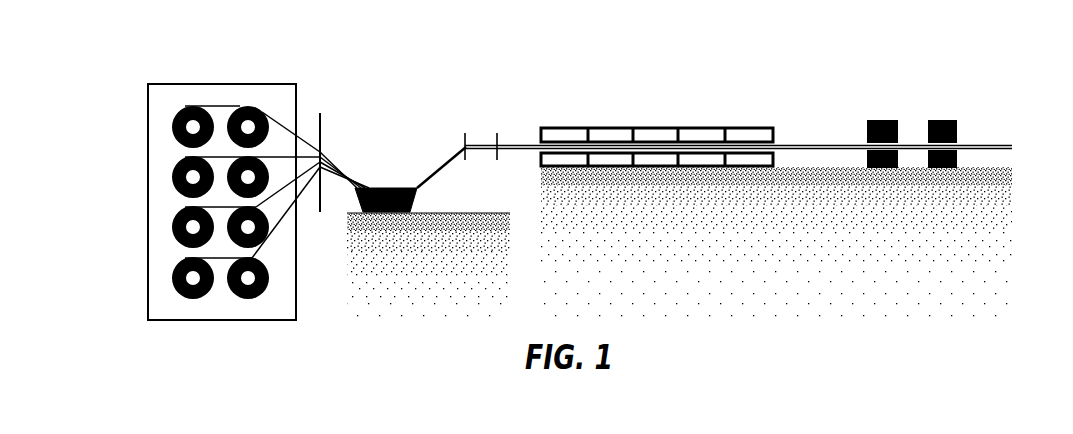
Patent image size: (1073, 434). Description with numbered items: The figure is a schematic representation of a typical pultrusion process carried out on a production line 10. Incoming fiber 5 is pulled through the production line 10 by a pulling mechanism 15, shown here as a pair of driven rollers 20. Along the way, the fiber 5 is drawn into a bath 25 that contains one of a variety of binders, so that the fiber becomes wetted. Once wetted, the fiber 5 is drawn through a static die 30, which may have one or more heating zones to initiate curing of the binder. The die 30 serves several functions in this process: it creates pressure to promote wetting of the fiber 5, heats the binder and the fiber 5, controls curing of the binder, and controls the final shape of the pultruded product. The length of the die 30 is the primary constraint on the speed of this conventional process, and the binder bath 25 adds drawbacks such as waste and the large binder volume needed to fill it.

The fiber 5 is at (338, 163).
The production line 10 is at (568, 68).
The pulling mechanism 15 is at (918, 151).
The driven rollers 20 is at (865, 130).
The bath 25 is at (415, 202).
The static die 30 is at (657, 127).